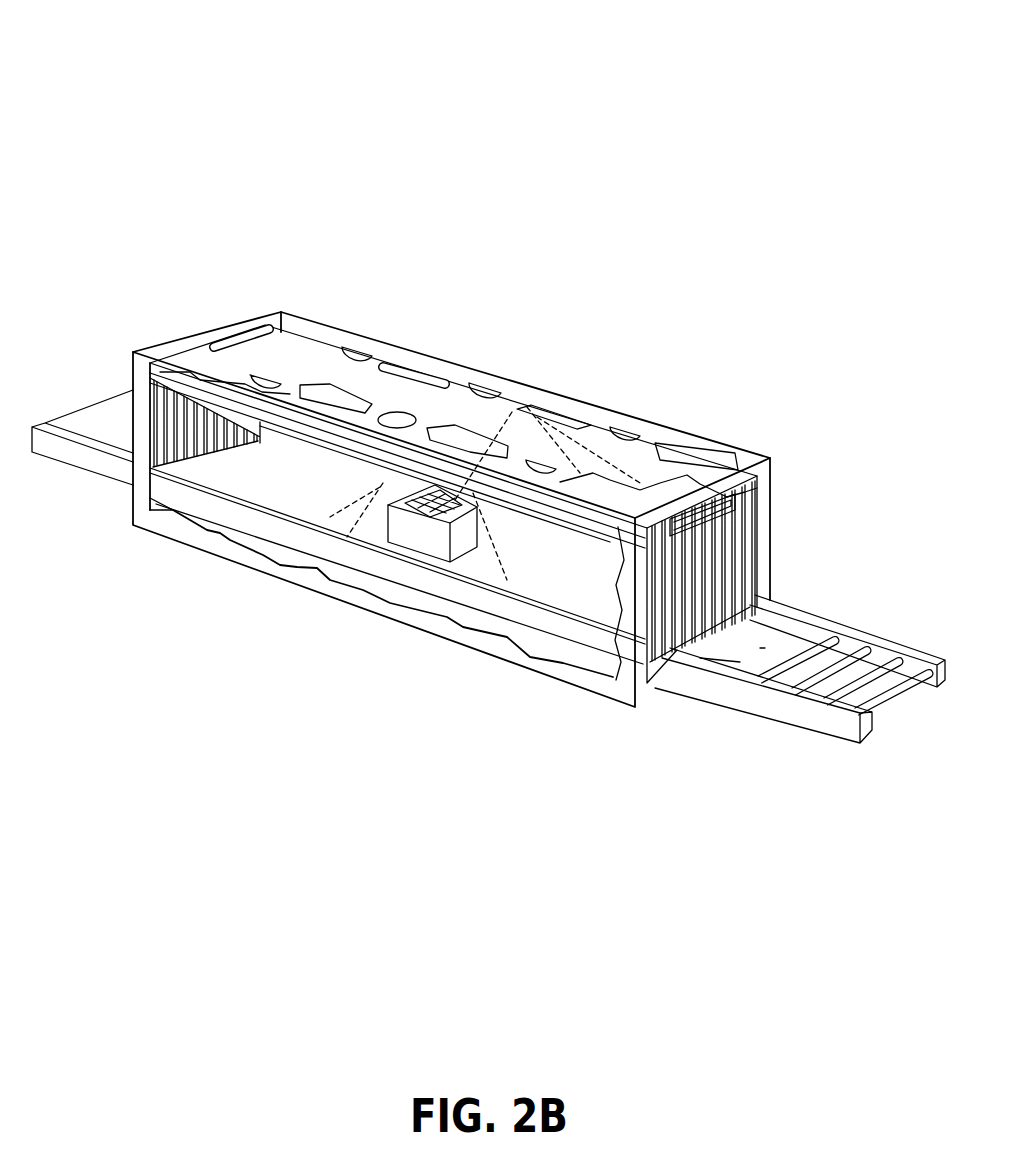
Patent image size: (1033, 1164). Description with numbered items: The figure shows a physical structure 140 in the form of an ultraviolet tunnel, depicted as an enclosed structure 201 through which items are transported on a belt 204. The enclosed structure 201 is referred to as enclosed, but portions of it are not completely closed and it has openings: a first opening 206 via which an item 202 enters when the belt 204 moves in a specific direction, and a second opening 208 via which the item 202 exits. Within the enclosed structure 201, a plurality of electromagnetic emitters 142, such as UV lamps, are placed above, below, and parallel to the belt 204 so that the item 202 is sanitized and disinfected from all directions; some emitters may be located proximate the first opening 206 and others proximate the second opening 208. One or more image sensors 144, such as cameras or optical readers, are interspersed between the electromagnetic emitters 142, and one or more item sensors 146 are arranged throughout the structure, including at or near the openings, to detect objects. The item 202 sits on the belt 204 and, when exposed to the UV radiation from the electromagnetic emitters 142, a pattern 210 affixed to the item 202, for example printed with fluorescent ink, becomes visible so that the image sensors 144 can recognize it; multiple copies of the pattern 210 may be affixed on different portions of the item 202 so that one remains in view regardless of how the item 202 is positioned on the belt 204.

The physical structure 140 is at (612, 102).
The electromagnetic emitter 142 is at (694, 448).
The image sensor 144 is at (482, 388).
The item sensor 146 is at (716, 508).
The enclosed structure 201 is at (396, 344).
The item 202 is at (440, 553).
The belt 204 is at (718, 647).
The first opening 206 is at (750, 577).
The second opening 208 is at (160, 347).
The pattern 210 is at (413, 513).